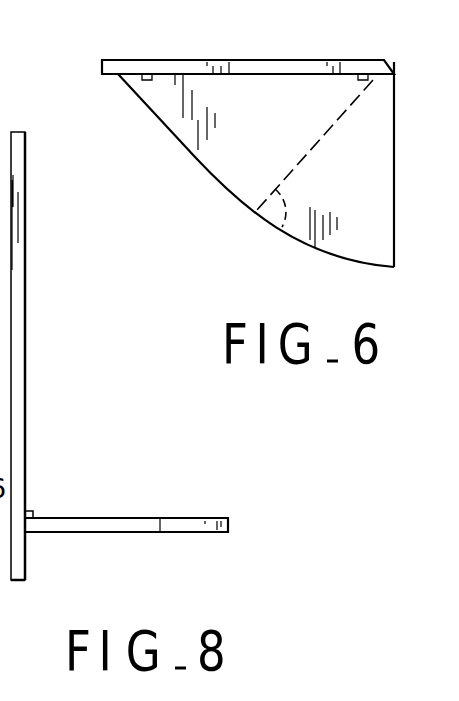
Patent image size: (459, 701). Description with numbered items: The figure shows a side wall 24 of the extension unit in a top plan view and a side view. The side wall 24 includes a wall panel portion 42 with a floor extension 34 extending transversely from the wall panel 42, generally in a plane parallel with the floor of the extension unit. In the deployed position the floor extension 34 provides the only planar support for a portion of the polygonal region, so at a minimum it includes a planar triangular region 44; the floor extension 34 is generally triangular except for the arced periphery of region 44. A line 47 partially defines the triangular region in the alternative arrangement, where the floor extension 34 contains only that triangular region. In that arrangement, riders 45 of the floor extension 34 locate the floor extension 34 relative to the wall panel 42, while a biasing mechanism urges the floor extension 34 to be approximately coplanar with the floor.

In FIG. 6, the side wall 24 is at (237, 46).
In FIG. 8, the side wall 24 is at (17, 282).
In FIG. 6, the wall panel portion 42 is at (277, 65).
In FIG. 6, the floor extension 34 is at (226, 152).
In FIG. 8, the floor extension 34 is at (147, 533).
In FIG. 6, the line 47 is at (283, 230).
In FIG. 6, the planar triangular region 44 is at (373, 197).
In FIG. 8, the riders 45 is at (28, 513).